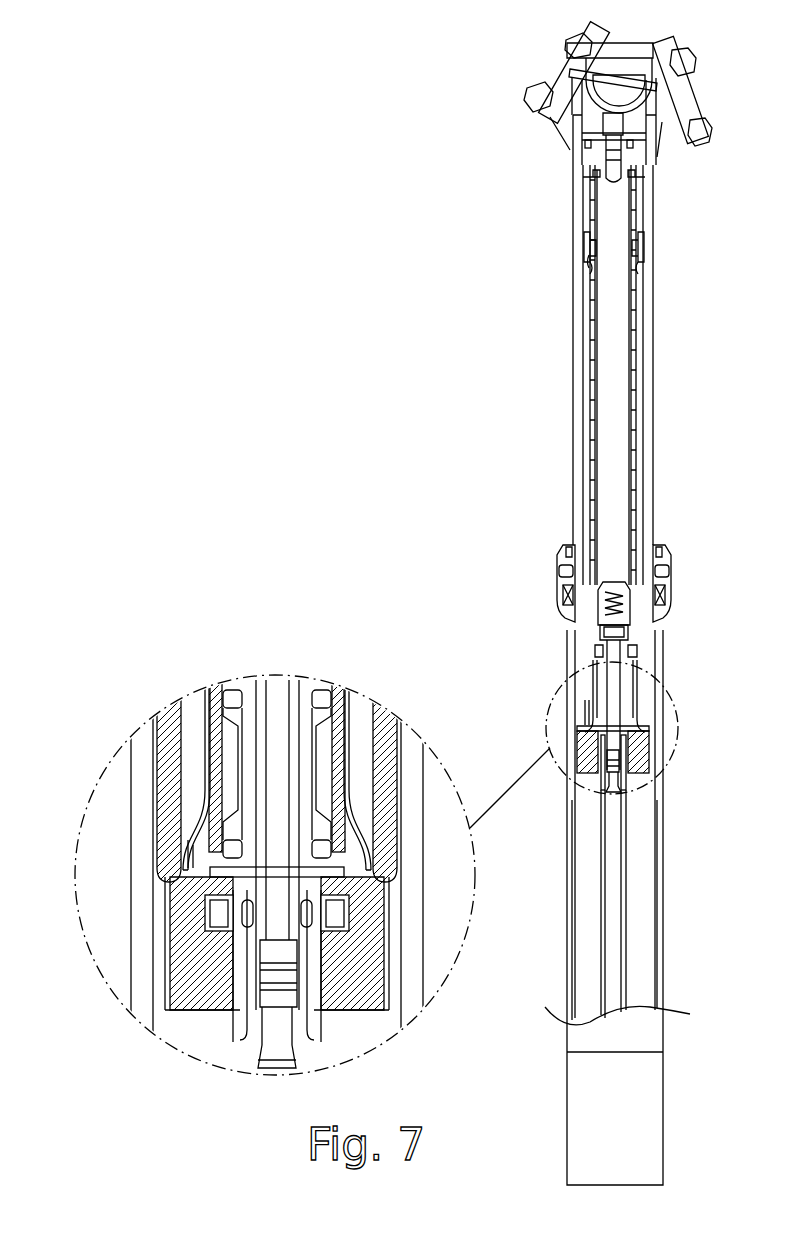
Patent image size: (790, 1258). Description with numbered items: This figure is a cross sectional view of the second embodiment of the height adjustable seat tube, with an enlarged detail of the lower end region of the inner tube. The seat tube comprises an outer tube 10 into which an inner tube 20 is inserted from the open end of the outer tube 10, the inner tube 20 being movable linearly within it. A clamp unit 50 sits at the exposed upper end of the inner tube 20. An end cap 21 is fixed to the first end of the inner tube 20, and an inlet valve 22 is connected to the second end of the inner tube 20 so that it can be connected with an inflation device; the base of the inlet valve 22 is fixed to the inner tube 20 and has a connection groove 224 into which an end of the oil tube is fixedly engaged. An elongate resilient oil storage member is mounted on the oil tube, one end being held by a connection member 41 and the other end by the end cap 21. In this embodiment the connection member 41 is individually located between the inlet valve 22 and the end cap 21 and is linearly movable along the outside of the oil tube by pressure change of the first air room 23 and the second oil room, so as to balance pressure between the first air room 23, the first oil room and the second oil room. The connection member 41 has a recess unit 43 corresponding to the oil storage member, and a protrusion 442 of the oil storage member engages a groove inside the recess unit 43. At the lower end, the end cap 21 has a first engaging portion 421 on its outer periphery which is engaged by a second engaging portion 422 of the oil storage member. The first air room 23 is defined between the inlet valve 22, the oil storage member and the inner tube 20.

The outer tube 10 is at (671, 904).
The inner tube 20 is at (662, 477).
The end cap 21 is at (198, 997).
The inlet valve 22 is at (590, 155).
The first air room 23 is at (192, 722).
The connection groove 224 is at (588, 260).
The connection member 41 is at (587, 240).
The first engaging portion 421 is at (183, 967).
The second engaging portion 422 is at (193, 915).
The recess unit 43 is at (597, 173).
The protrusion 442 is at (590, 270).
The clamp unit 50 is at (700, 42).